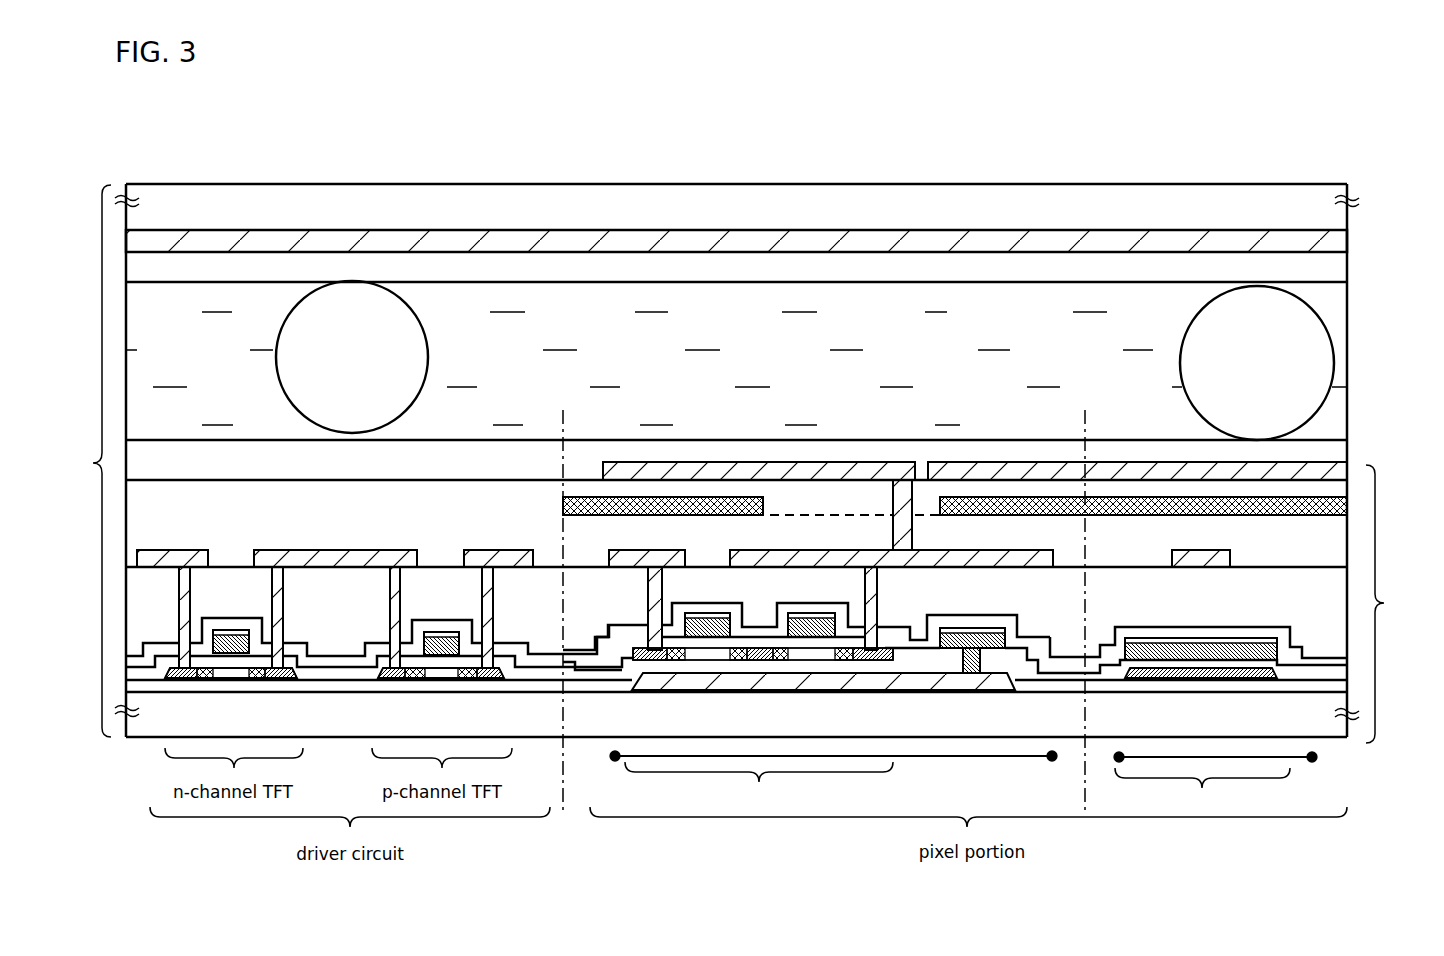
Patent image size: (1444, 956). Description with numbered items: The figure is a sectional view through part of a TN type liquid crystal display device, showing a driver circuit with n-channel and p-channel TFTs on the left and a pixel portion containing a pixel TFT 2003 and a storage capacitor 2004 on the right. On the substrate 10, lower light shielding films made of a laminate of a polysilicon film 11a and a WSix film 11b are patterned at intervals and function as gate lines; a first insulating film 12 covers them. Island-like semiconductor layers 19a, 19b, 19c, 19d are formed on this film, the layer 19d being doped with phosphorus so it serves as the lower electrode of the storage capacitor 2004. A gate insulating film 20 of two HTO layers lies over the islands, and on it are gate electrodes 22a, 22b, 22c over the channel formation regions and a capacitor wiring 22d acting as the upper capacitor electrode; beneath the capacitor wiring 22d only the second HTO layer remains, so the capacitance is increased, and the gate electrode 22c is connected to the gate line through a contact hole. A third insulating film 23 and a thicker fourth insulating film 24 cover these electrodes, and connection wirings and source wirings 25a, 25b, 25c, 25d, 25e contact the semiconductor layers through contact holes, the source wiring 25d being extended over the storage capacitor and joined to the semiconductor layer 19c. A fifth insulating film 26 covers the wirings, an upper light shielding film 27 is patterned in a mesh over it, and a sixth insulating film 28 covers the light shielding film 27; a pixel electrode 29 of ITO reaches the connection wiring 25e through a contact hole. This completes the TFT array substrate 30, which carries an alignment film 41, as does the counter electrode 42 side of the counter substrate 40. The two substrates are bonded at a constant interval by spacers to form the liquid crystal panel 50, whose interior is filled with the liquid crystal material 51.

The substrate 10 is at (148, 720).
The polysilicon film 11a is at (915, 674).
The WSix film 11b is at (750, 680).
The first insulating film 12 is at (498, 685).
The island-like semiconductor layer 19a is at (230, 680).
The island-like semiconductor layer 19b is at (443, 680).
The island-like semiconductor layer 19c is at (705, 661).
The island-like semiconductor layer 19d is at (1200, 680).
The gate insulating film 20 is at (1037, 673).
The gate electrode 22a is at (236, 631).
The gate electrode 22b is at (442, 633).
The gate electrode 22c is at (707, 614).
The capacitor wiring 22d is at (1222, 638).
The third insulating film 23 is at (512, 643).
The fourth insulating film 24 is at (1270, 578).
The connection wiring 25a is at (157, 558).
The connection wiring 25b is at (310, 562).
The connection wiring 25c is at (482, 560).
The source wiring 25d is at (640, 556).
The connection wiring 25e is at (938, 556).
The fifth insulating film 26 is at (1130, 550).
The upper light shielding film 27 is at (662, 480).
The sixth insulating film 28 is at (1135, 478).
The pixel electrode 29 is at (963, 470).
The TFT array substrate 30 is at (1396, 604).
The counter substrate 40 is at (1065, 205).
The alignment film 41 is at (845, 268).
The counter electrode 42 is at (627, 248).
The liquid crystal panel 50 is at (90, 461).
The liquid crystal material 51 is at (212, 297).
The pixel TFT 2003 is at (835, 780).
The storage capacitor 2004 is at (1218, 782).